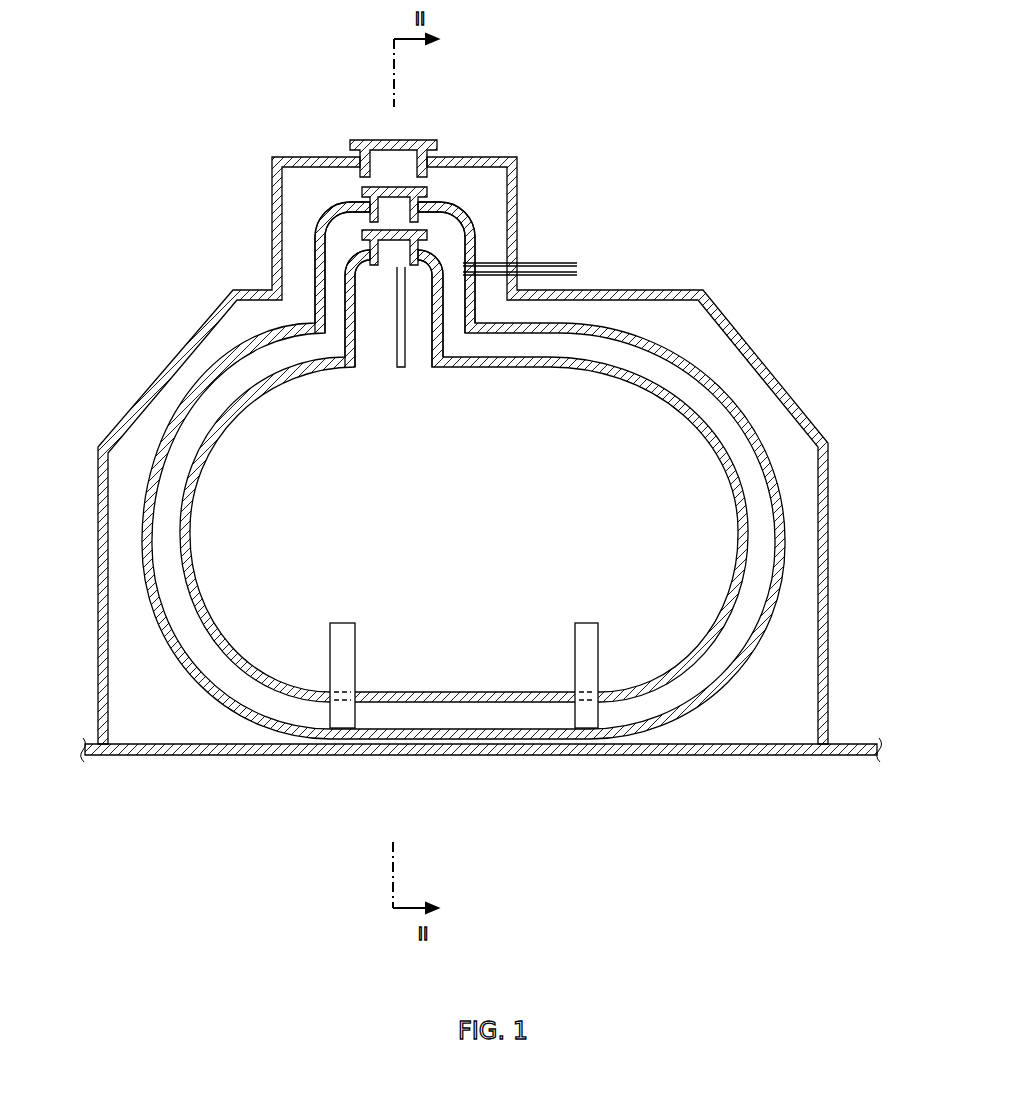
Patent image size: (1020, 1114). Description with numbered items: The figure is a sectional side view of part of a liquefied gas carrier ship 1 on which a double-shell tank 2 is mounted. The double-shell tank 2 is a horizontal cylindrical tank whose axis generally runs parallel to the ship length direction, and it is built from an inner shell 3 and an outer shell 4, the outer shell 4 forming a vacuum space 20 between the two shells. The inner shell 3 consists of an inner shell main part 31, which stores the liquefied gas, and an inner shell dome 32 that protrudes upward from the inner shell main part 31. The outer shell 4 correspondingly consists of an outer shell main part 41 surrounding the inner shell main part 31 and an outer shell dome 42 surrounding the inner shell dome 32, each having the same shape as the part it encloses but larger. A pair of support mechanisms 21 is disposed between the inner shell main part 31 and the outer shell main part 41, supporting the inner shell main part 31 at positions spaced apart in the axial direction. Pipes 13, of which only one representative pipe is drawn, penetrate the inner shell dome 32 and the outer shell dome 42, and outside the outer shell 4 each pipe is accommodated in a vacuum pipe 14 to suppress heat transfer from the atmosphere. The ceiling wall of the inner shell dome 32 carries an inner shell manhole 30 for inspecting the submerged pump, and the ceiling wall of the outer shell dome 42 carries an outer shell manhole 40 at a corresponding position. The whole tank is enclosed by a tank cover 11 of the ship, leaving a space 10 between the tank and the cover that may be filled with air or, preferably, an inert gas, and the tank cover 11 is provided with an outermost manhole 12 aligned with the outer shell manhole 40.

The liquefied gas carrier ship 1 is at (805, 349).
The double-shell tank 2 is at (417, 835).
The inner shell 3 is at (498, 705).
The outer shell 4 is at (440, 735).
The space 10 is at (778, 717).
The tank cover 11 is at (668, 290).
The outermost manhole 12 is at (402, 164).
The pipes 13 is at (408, 330).
The vacuum pipe 14 is at (549, 263).
The vacuum space 20 is at (547, 712).
The support mechanisms 21 is at (338, 715).
The inner shell manhole 30 is at (392, 253).
The inner shell main part 31 is at (276, 685).
The inner shell dome 32 is at (343, 300).
The outer shell manhole 40 is at (390, 207).
The outer shell main part 41 is at (232, 703).
The outer shell dome 42 is at (315, 242).